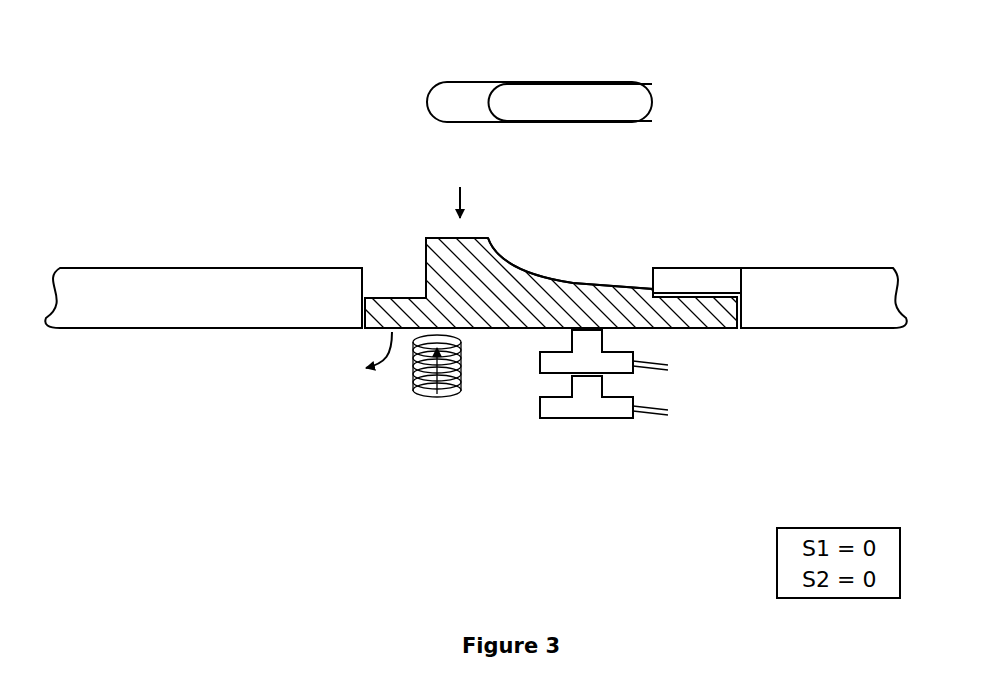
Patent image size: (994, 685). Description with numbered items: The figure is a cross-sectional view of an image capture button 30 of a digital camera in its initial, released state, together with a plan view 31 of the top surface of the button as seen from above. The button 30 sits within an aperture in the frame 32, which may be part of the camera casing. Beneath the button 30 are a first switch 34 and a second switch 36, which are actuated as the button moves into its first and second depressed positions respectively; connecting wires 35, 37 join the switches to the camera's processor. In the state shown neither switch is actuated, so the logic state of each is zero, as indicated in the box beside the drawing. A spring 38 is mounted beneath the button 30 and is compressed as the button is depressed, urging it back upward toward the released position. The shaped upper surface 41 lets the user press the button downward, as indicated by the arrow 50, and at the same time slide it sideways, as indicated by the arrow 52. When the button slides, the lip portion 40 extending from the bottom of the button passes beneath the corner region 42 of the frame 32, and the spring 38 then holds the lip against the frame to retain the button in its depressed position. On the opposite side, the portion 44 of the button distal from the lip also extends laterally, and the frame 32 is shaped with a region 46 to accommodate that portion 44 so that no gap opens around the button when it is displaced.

The plan view of the top surface of the button 31 is at (573, 75).
The frame 32 is at (172, 278).
The image capture button 30 is at (497, 285).
The lip portion 40 is at (402, 296).
The upper surface 41 is at (575, 280).
The portion of the button distal from the lip portion 44 is at (715, 328).
The frame region 46 is at (687, 278).
The corner region of the frame 42 is at (355, 330).
The arrow indicating downward pressing 50 is at (462, 190).
The arrow indicating lateral movement 52 is at (358, 356).
The spring 38 is at (412, 402).
The first switch 34 is at (540, 370).
The connecting wires of the first switch 35 is at (672, 367).
The second switch 36 is at (540, 423).
The connecting wires of the second switch 37 is at (672, 412).